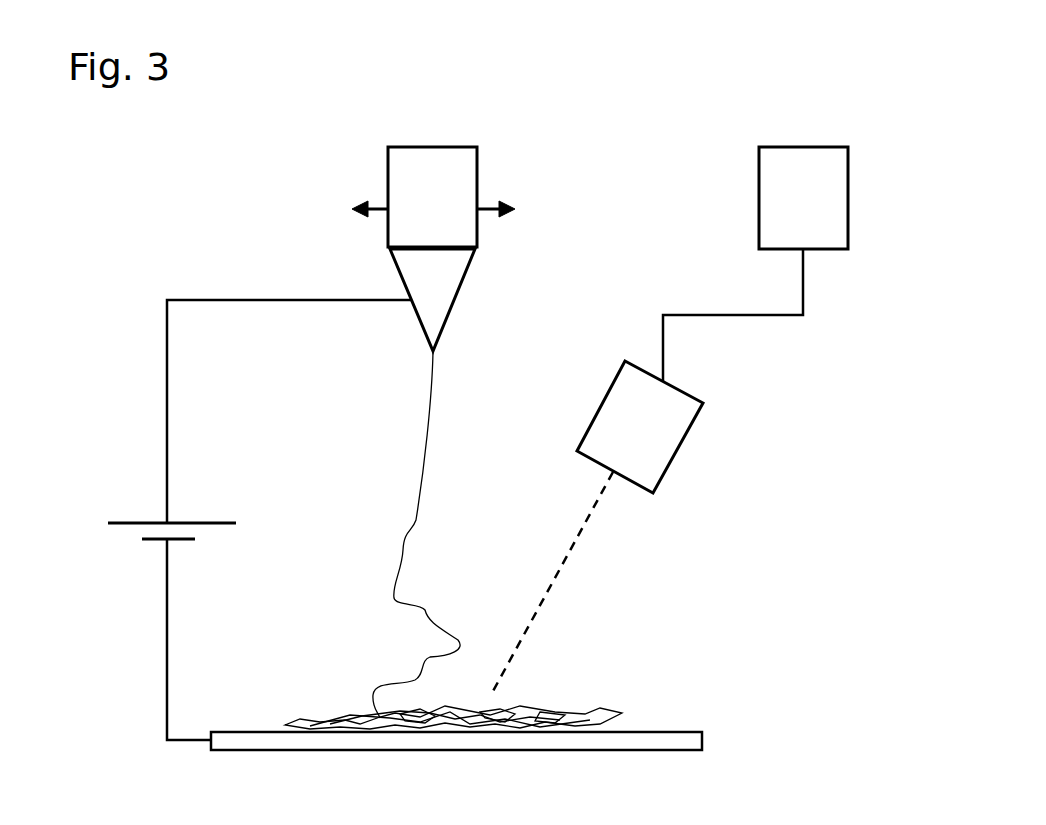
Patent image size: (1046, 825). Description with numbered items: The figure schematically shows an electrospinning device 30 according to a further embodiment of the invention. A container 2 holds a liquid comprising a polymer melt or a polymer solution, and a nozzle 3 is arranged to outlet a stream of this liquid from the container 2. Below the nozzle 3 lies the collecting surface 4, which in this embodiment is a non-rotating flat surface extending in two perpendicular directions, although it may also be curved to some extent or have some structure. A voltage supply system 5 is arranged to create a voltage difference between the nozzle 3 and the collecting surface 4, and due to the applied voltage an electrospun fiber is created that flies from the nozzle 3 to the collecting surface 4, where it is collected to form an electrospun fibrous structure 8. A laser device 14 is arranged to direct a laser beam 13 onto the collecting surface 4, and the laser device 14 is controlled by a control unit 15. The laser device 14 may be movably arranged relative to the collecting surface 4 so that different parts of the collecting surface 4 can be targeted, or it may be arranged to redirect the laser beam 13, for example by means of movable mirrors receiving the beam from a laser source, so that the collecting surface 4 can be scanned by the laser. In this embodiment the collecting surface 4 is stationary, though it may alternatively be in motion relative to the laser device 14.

The electrospinning device 30 is at (657, 152).
The container 2 is at (393, 185).
The nozzle 3 is at (460, 289).
The voltage supply system 5 is at (103, 532).
The collecting surface 4 is at (685, 730).
The electrospun fibrous structure 8 is at (355, 718).
The laser device 14 is at (613, 400).
The laser beam 13 is at (580, 528).
The control unit 15 is at (816, 235).